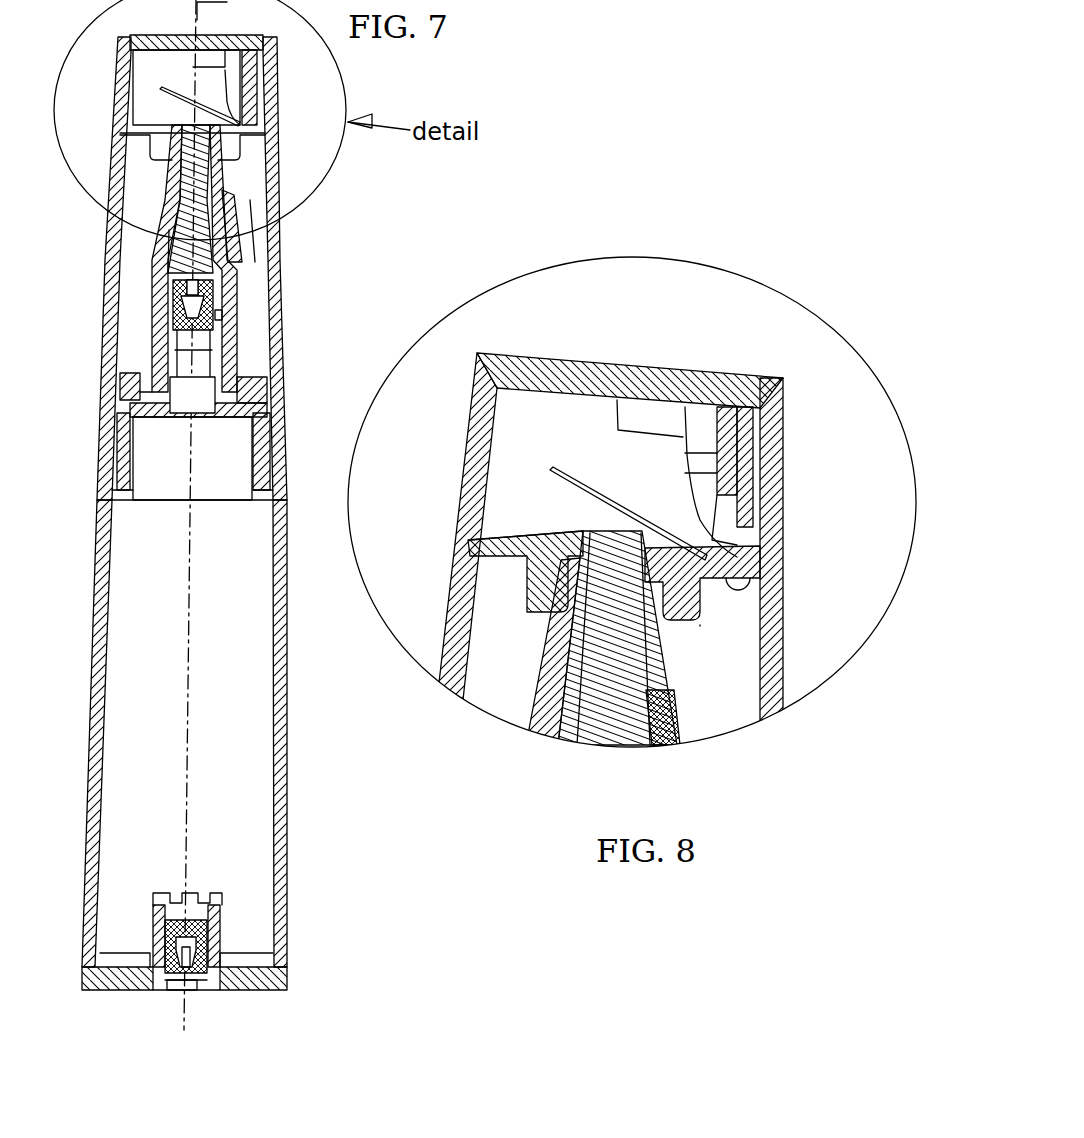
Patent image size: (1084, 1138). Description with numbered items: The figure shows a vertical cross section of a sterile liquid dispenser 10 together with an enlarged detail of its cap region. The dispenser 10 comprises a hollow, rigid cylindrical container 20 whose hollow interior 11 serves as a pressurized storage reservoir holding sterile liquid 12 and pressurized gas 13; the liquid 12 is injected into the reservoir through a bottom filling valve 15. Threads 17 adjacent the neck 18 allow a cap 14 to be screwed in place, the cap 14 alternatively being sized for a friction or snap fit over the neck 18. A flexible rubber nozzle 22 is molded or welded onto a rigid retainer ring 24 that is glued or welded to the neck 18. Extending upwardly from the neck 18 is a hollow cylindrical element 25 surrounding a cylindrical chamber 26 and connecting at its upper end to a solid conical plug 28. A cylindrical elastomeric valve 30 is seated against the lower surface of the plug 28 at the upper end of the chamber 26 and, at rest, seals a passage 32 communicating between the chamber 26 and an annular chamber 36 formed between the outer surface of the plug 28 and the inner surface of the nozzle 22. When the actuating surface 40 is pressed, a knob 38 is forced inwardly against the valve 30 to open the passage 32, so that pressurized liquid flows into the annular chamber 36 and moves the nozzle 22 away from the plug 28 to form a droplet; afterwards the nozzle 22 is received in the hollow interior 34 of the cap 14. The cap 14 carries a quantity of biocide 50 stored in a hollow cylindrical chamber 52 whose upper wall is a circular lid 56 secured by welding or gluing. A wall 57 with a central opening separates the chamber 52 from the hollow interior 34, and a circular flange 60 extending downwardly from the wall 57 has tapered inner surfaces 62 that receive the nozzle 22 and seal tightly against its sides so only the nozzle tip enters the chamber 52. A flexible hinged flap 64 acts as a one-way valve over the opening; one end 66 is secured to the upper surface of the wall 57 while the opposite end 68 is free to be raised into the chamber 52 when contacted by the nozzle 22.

In FIG. 7, the sterile liquid dispenser 10 is at (347, 922).
In FIG. 7, the hollow interior 11 is at (120, 584).
In FIG. 7, the sterile liquid 12 is at (158, 728).
In FIG. 7, the pressurized gas 13 is at (244, 728).
In FIG. 7, the cap 14 is at (106, 274).
In FIG. 8, the cap 14 is at (780, 552).
In FIG. 7, the bottom filling valve 15 is at (190, 985).
In FIG. 7, the threads 17 is at (114, 440).
In FIG. 7, the neck 18 is at (118, 462).
In FIG. 7, the container 20 is at (95, 545).
In FIG. 7, the flexible nozzle 22 is at (155, 246).
In FIG. 8, the flexible nozzle 22 is at (550, 643).
In FIG. 7, the retainer ring 24 is at (122, 385).
In FIG. 7, the hollow cylindrical element 25 is at (183, 340).
In FIG. 7, the cylindrical chamber 26 is at (183, 335).
In FIG. 7, the solid conical plug 28 is at (190, 176).
In FIG. 8, the solid conical plug 28 is at (655, 645).
In FIG. 7, the cylindrical elastomeric valve 30 is at (210, 283).
In FIG. 7, the passage 32 is at (207, 348).
In FIG. 7, the hollow interior of cap 34 is at (257, 233).
In FIG. 8, the hollow interior of cap 34 is at (737, 682).
In FIG. 7, the annular chamber 36 is at (170, 240).
In FIG. 7, the knob 38 is at (227, 313).
In FIG. 7, the actuating surface 40 is at (227, 253).
In FIG. 7, the biocide 50 is at (195, 87).
In FIG. 8, the biocide 50 is at (636, 473).
In FIG. 8, the hollow cylindrical chamber 52 is at (498, 432).
In FIG. 7, the circular lid 56 is at (152, 36).
In FIG. 8, the circular lid 56 is at (602, 368).
In FIG. 8, the wall 57 is at (768, 582).
In FIG. 8, the circular flange 60 is at (700, 608).
In FIG. 7, the tapered inner surfaces 62 is at (192, 147).
In FIG. 8, the tapered inner surfaces 62 is at (577, 555).
In FIG. 8, the flexible hinged flap 64 is at (562, 467).
In FIG. 7, the secured end of flap 66 is at (232, 97).
In FIG. 8, the secured end of flap 66 is at (700, 552).
In FIG. 7, the free end of flap 68 is at (200, 106).
In FIG. 8, the free end of flap 68 is at (547, 478).